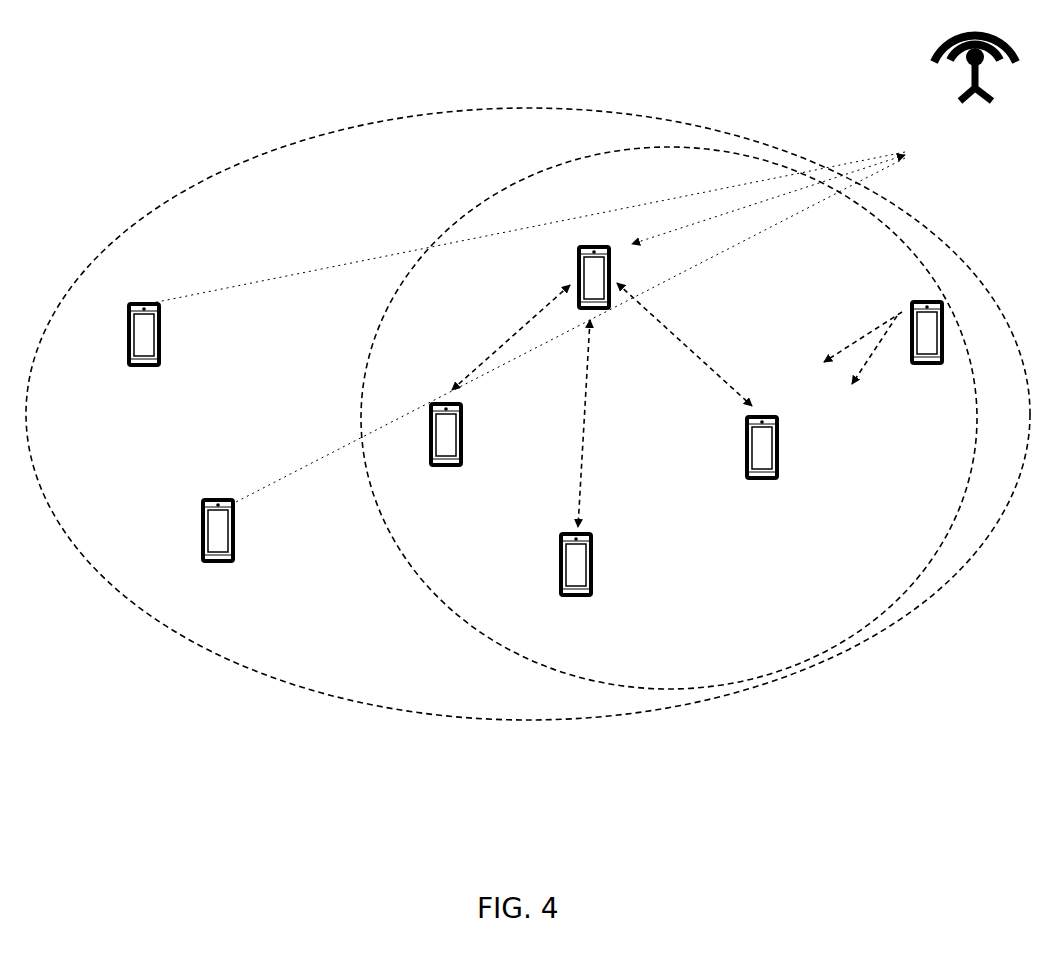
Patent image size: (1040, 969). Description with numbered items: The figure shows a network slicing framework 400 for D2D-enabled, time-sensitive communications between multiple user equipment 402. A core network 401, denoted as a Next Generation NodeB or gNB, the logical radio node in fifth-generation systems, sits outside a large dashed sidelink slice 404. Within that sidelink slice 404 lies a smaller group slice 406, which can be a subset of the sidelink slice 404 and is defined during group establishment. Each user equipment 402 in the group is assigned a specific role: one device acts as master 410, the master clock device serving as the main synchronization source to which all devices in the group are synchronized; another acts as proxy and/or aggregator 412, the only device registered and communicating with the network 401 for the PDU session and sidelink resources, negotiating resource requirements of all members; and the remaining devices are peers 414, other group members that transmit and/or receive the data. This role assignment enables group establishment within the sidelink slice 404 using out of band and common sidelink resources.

The network slicing framework 400 is at (274, 30).
The core network 401 is at (584, 269).
The user equipment 402 is at (538, 442).
The sidelink slice 404 is at (250, 672).
The group slice 406 is at (462, 612).
The master 410 is at (908, 305).
The proxy and/or aggregator 412 is at (612, 306).
The peer 414 is at (429, 436).